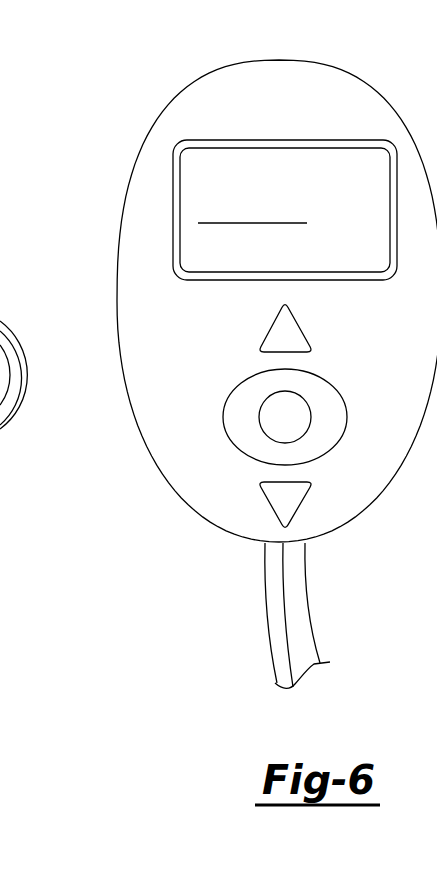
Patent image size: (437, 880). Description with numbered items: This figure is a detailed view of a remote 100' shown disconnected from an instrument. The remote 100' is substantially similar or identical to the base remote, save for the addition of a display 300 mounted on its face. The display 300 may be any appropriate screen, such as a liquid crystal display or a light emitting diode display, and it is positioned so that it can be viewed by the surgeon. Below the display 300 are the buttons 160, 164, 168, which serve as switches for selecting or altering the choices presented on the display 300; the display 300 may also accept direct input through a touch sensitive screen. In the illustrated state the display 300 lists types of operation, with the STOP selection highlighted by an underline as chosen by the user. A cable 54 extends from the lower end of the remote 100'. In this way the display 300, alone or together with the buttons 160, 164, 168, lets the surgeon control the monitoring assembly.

The remote 100' is at (222, 293).
The display 300 is at (330, 165).
The button 160 is at (267, 334).
The button 168 is at (225, 430).
The button 164 is at (262, 497).
The cable 54 is at (307, 623).